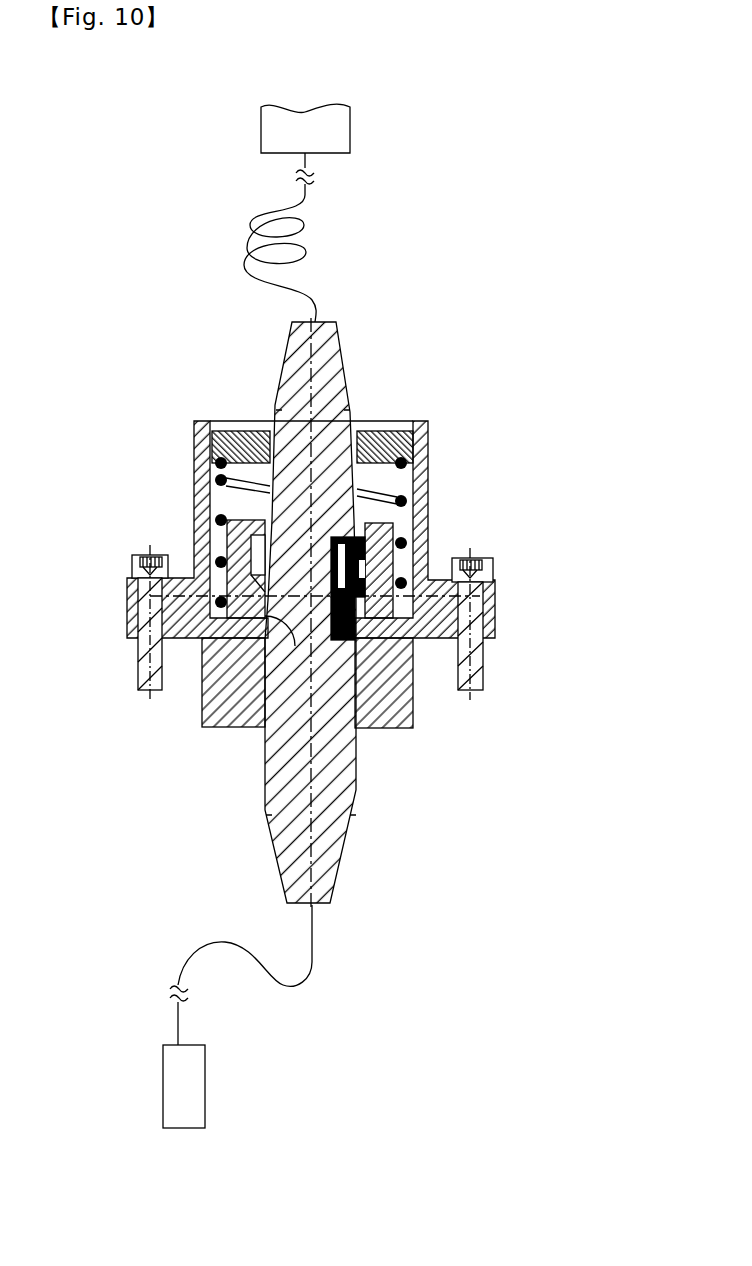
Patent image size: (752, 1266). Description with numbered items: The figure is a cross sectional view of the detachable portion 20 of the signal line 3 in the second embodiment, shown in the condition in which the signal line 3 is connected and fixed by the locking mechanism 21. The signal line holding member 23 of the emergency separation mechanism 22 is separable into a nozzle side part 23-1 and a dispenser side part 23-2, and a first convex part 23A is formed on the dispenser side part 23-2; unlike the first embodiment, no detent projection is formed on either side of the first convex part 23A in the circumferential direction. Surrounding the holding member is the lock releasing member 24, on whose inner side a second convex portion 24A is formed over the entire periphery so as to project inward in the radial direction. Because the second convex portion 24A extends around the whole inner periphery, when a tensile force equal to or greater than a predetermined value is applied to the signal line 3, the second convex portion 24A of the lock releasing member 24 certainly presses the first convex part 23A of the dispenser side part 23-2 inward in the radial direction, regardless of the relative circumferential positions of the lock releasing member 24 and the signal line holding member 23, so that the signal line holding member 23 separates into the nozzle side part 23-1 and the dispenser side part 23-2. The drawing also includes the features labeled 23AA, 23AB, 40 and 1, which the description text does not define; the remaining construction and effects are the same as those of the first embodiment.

The propulsion load / propeller unit 1 is at (207, 1082).
The signal line 3 is at (308, 243).
The detachable portion 20 is at (492, 332).
The locking mechanism 21 is at (128, 398).
The emergency separation mechanism 22 is at (185, 476).
The signal line holding member 23 is at (445, 614).
The nozzle side part 23-1 is at (352, 383).
The dispenser side part 23-2 is at (342, 870).
The first convex part 23A is at (478, 559).
The sensor element 23AA is at (398, 572).
The sensor element 23AB is at (392, 605).
The lock releasing member 24 is at (236, 520).
The second convex portion 24A is at (272, 650).
The controller 40 is at (353, 118).